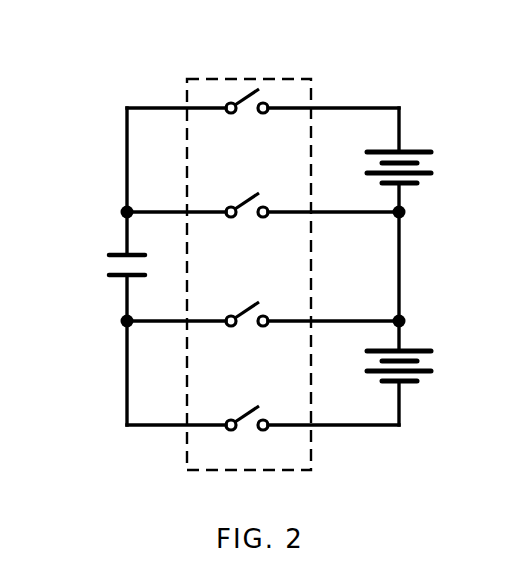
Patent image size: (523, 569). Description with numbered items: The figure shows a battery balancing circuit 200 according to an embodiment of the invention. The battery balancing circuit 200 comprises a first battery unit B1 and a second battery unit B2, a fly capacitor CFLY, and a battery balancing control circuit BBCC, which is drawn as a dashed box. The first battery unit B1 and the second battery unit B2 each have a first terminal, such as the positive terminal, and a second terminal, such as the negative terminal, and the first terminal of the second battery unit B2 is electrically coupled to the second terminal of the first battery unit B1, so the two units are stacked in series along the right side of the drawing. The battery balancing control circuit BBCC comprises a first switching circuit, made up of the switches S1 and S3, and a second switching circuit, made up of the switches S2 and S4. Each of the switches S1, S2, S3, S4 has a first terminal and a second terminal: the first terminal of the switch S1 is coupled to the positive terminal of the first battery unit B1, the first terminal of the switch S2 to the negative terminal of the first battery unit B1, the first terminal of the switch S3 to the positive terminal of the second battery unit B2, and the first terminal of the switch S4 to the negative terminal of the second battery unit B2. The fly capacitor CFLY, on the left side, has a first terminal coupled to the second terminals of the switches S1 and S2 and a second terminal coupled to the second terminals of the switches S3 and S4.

The battery balancing circuit 200 is at (95, 98).
The battery balancing control circuit BBCC is at (300, 78).
The switch S1 is at (247, 119).
The switch S2 is at (247, 228).
The switch S3 is at (247, 337).
The switch S4 is at (247, 436).
The first battery unit B1 is at (420, 167).
The second battery unit B2 is at (421, 367).
The fly capacitor CFLY is at (91, 267).